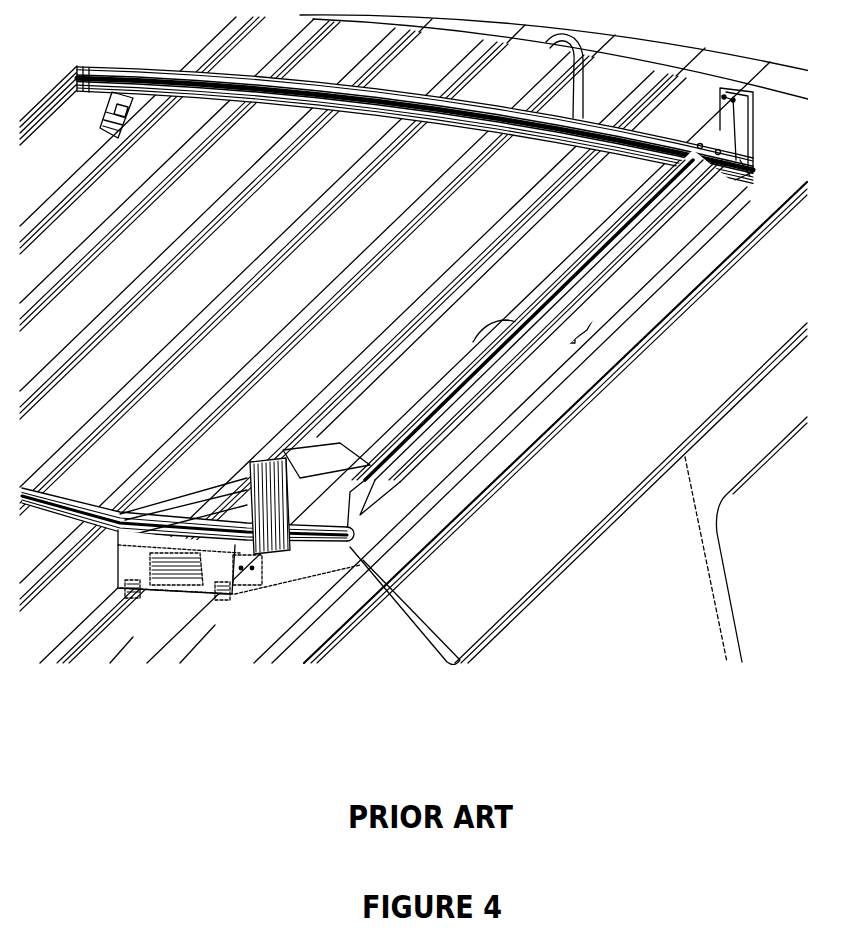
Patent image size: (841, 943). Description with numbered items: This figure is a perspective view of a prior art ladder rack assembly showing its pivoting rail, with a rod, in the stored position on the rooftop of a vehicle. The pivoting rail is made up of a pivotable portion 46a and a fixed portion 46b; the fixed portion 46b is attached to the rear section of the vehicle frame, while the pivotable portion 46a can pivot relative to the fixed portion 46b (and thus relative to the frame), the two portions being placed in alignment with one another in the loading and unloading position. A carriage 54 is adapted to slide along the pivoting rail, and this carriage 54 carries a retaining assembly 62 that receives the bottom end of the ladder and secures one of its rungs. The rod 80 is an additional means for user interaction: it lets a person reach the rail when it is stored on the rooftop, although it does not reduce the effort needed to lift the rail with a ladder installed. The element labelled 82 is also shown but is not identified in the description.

The cross rail / roof rack bracket 82 is at (668, 106).
The pivotable portion 46a is at (480, 413).
The fixed portion 46b is at (190, 573).
The carriage 54 is at (137, 552).
The retaining assembly 62 is at (283, 547).
The rod 80 is at (413, 623).